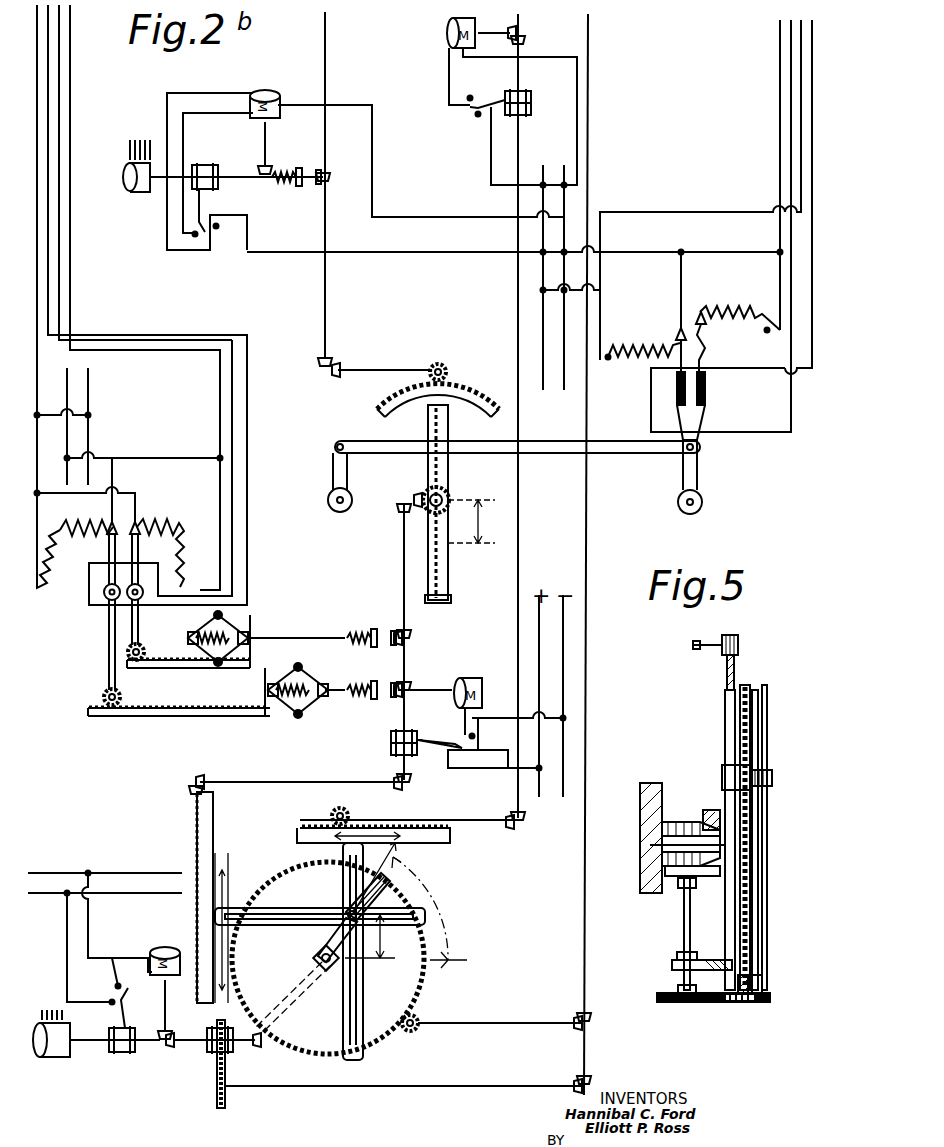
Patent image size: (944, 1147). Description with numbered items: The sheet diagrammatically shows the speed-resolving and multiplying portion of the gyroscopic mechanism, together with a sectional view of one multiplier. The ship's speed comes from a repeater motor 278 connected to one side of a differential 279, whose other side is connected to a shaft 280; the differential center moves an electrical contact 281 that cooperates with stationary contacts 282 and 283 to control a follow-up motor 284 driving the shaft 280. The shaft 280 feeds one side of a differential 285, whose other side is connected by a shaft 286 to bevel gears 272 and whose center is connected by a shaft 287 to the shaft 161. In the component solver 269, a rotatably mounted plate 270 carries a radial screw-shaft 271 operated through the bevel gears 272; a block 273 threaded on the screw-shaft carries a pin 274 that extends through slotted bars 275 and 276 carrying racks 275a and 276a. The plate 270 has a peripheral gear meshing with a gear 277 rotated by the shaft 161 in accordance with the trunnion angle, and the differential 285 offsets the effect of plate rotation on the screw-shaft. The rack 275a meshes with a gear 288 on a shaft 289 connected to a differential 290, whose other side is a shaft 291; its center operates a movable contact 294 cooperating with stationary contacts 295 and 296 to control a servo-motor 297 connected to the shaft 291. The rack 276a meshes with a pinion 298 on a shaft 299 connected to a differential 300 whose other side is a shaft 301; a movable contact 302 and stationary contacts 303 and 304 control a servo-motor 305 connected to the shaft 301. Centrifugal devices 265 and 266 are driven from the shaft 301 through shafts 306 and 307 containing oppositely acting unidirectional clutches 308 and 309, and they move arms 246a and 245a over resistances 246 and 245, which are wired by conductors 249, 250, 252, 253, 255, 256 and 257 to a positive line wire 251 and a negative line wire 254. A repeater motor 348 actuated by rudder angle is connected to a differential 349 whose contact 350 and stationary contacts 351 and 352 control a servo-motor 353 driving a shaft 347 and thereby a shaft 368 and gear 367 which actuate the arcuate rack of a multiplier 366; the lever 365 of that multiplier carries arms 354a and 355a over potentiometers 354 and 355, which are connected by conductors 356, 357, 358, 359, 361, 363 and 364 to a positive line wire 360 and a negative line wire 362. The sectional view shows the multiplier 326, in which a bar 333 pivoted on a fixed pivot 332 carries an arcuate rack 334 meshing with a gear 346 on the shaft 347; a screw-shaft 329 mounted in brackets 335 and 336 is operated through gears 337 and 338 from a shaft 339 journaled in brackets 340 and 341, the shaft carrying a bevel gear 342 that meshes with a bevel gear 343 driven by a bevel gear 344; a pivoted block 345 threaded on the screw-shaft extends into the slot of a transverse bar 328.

In FIG. 2B, the shaft 161 is at (583, 938).
In FIG. 2B, the resistance 245 is at (76, 528).
In FIG. 2B, the arm 245a is at (118, 562).
In FIG. 2B, the resistance 246 is at (173, 548).
In FIG. 2B, the movable arm 246a is at (192, 562).
In FIG. 2B, the conductor 249 is at (37, 60).
In FIG. 2B, the conductor 250 is at (48, 80).
In FIG. 2B, the positive line wire 251 is at (88, 375).
In FIG. 2B, the conductor 252 is at (78, 424).
In FIG. 2B, the conductor 253 is at (90, 497).
In FIG. 2B, the negative line wire 254 is at (67, 400).
In FIG. 2B, the conductor 255 is at (112, 475).
In FIG. 2B, the conductor 256 is at (59, 103).
In FIG. 2B, the conductor 257 is at (70, 128).
In FIG. 2B, the centrifugal device 265 is at (206, 625).
In FIG. 2B, the centrifugal device 266 is at (325, 720).
In FIG. 2B, the component solver 269 is at (446, 912).
In FIG. 2B, the rotatably mounted plate 270 is at (380, 1030).
In FIG. 2B, the screw-shaft 271 is at (320, 946).
In FIG. 2B, the bevel gears 272 is at (318, 961).
In FIG. 2B, the block 273 is at (340, 905).
In FIG. 2B, the pin 274 is at (340, 914).
In FIG. 2B, the slotted bar 275 is at (352, 1060).
In FIG. 2B, the rack 275a is at (300, 821).
In FIG. 2B, the slotted bar 276 is at (232, 910).
In FIG. 2B, the rack 276a is at (207, 846).
In FIG. 2B, the gear 277 is at (418, 1023).
In FIG. 2B, the repeater motor 278 is at (63, 1034).
In FIG. 2B, the differential 279 is at (111, 1055).
In FIG. 2B, the shaft 280 is at (154, 1043).
In FIG. 2B, the movable electrical contact 281 is at (124, 982).
In FIG. 2B, the stationary contact 282 is at (111, 1001).
In FIG. 2B, the stationary contact 283 is at (131, 994).
In FIG. 2B, the follow-up motor 284 is at (165, 950).
In FIG. 2B, the differential 285 is at (234, 1051).
In FIG. 2B, the shaft 286 is at (300, 988).
In FIG. 2B, the shaft 287 is at (455, 1089).
In FIG. 2B, the gear 288 is at (340, 806).
In FIG. 2B, the shaft 289 is at (515, 796).
In FIG. 2B, the differential 290 is at (524, 98).
In FIG. 2B, the shaft 291 is at (522, 30).
In FIG. 2B, the movable contact 294 is at (470, 107).
In FIG. 2B, the stationary contact 295 is at (477, 116).
In FIG. 2B, the stationary contact 296 is at (471, 96).
In FIG. 2B, the follow-up servo-motor 297 is at (447, 40).
In FIG. 2B, the pinion 298 is at (200, 1005).
In FIG. 2B, the shaft 299 is at (312, 782).
In FIG. 2B, the differential 300 is at (390, 746).
In FIG. 2B, the shaft 301 is at (406, 650).
In FIG. 2B, the movable electrical contact 302 is at (517, 731).
In FIG. 2B, the stationary contact 303 is at (460, 735).
In FIG. 2B, the stationary contact 304 is at (495, 758).
In FIG. 2B, the follow-up servo-motor 305 is at (476, 675).
In FIG. 2B, the shaft 306 is at (296, 623).
In FIG. 2B, the shaft 307 is at (336, 679).
In FIG. 2B, the unidirectional clutch 308 is at (373, 630).
In FIG. 2B, the unidirectional clutch 309 is at (378, 688).
In FIG. 5, the multiplier 326 is at (717, 706).
In FIG. 5, the transverse bar 328 is at (767, 845).
In FIG. 5, the screw-shaft 329 is at (752, 728).
In FIG. 5, the fixed pivot 332 is at (662, 838).
In FIG. 5, the bar 333 is at (740, 716).
In FIG. 5, the arcuate rack 334 is at (735, 668).
In FIG. 5, the bracket 335 is at (764, 690).
In FIG. 5, the bracket 336 is at (748, 982).
In FIG. 5, the gear 337 is at (740, 1002).
In FIG. 5, the gear 338 is at (680, 1002).
In FIG. 5, the shaft 339 is at (683, 942).
In FIG. 5, the bracket 340 is at (672, 965).
In FIG. 5, the bracket 341 is at (683, 885).
In FIG. 5, the bevel gear 342 is at (665, 866).
In FIG. 5, the bevel gear 343 is at (708, 808).
In FIG. 5, the bevel gear 344 is at (660, 795).
In FIG. 5, the pivoted block 345 is at (724, 778).
In FIG. 5, the gear 346 is at (736, 625).
In FIG. 2B, the shaft 347 is at (292, 183).
In FIG. 5, the shaft 347 is at (703, 650).
In FIG. 2B, the repeater motor 348 is at (140, 190).
In FIG. 2B, the differential 349 is at (218, 158).
In FIG. 2B, the movable electrical contact 350 is at (203, 240).
In FIG. 2B, the stationary contact 351 is at (192, 236).
In FIG. 2B, the stationary contact 352 is at (218, 232).
In FIG. 2B, the follow-up servo-motor 353 is at (270, 80).
In FIG. 2B, the potentiometer 354 is at (740, 327).
In FIG. 2B, the arm 354a is at (770, 363).
In FIG. 2B, the potentiometer 355 is at (643, 338).
In FIG. 2B, the arm 355a is at (677, 340).
In FIG. 2B, the conductor 356 is at (812, 32).
In FIG. 2B, the conductor 357 is at (600, 297).
In FIG. 2B, the conductor 358 is at (791, 392).
In FIG. 2B, the conductor 359 is at (780, 270).
In FIG. 2B, the positive line wire 360 is at (543, 206).
In FIG. 2B, the conductor 361 is at (681, 280).
In FIG. 2B, the negative line wire 362 is at (567, 198).
In FIG. 2B, the conductor 363 is at (740, 256).
In FIG. 2B, the conductor 364 is at (702, 308).
In FIG. 2B, the lever 365 is at (703, 417).
In FIG. 2B, the multiplier 366 is at (451, 462).
In FIG. 2B, the gear 367 is at (438, 364).
In FIG. 2B, the shaft 368 is at (335, 305).